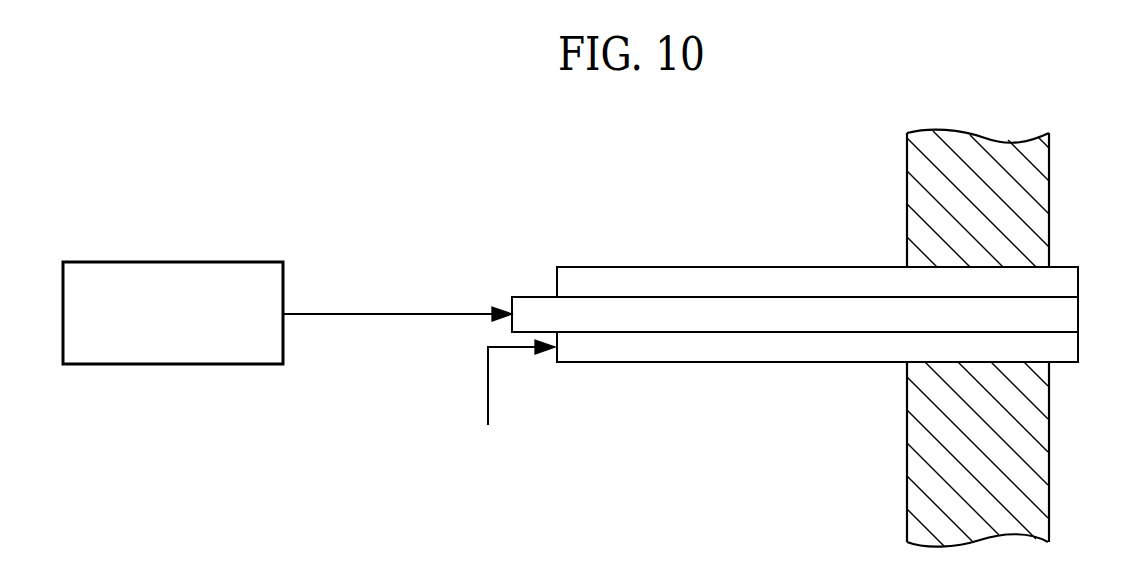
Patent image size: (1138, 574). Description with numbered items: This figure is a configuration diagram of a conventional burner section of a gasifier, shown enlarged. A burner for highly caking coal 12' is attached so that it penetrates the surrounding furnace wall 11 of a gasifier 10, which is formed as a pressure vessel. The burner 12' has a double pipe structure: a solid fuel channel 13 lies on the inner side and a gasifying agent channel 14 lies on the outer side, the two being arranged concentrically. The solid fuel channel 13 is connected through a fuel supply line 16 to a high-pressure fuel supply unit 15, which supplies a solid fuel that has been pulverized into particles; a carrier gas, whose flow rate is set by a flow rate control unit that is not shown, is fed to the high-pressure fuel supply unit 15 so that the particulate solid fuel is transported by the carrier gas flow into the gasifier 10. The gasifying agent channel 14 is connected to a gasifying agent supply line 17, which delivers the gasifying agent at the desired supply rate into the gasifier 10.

The gasifier 10 is at (963, 338).
The surrounding wall (furnace wall) 11 is at (907, 471).
The burner for highly caking coal 12' is at (795, 264).
The solid fuel channel 13 is at (782, 315).
The gasifying agent channel 14 is at (834, 265).
The high-pressure fuel supply unit 15 is at (212, 262).
The fuel supply line 16 is at (307, 318).
The gasifying agent supply line 17 is at (488, 400).